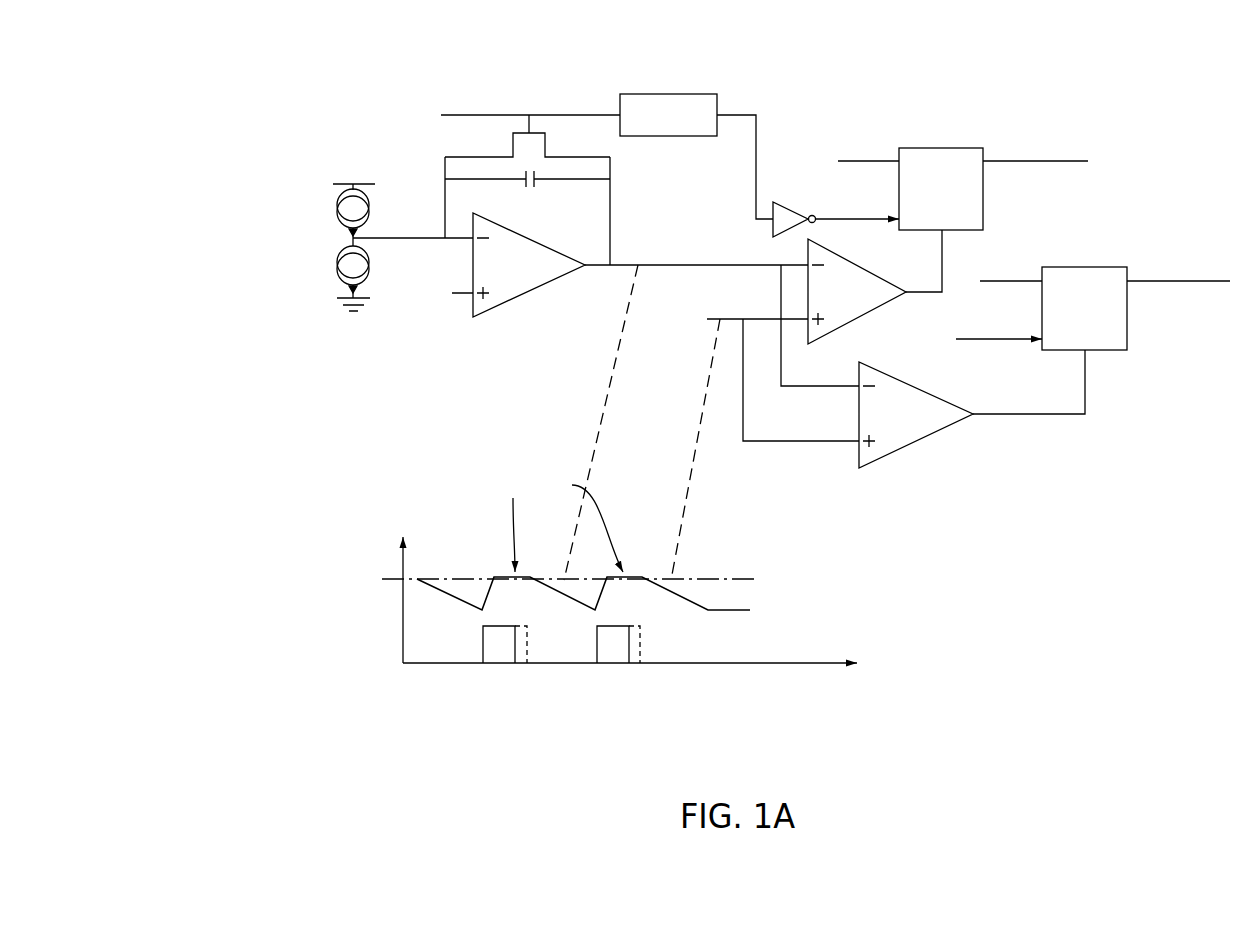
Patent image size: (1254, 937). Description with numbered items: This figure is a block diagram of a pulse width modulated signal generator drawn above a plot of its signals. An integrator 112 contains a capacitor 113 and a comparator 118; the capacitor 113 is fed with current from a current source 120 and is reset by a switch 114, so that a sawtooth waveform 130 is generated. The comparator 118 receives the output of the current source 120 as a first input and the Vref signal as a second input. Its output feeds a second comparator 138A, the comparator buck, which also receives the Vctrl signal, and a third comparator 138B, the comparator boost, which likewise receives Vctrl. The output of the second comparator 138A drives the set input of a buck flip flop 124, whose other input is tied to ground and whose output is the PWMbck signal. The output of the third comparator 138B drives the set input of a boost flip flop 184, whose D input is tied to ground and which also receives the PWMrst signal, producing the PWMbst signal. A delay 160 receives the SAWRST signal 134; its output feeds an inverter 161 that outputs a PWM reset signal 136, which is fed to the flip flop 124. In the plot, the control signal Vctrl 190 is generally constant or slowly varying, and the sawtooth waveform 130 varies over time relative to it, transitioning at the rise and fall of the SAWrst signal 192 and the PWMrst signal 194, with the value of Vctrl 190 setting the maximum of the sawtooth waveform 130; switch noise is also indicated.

The integrator 112 is at (507, 162).
The capacitor 113 is at (538, 183).
The switch 114 is at (528, 106).
The comparator 118 is at (469, 265).
The current source 120 is at (313, 203).
The flip-flop 124 is at (945, 147).
The sawtooth waveform 130 is at (431, 596).
The SAWRST signal 134 is at (385, 92).
The PWM reset signal 136 is at (816, 172).
The second comparator 138A is at (846, 320).
The third comparator 138B is at (917, 443).
The delay 160 is at (667, 84).
The inverter 161 is at (790, 237).
The second flip flop 184 is at (1117, 350).
The control signal Vctrl 190 is at (447, 578).
The SAWrst signal 192 is at (503, 678).
The PWMrst signal 194 is at (615, 678).